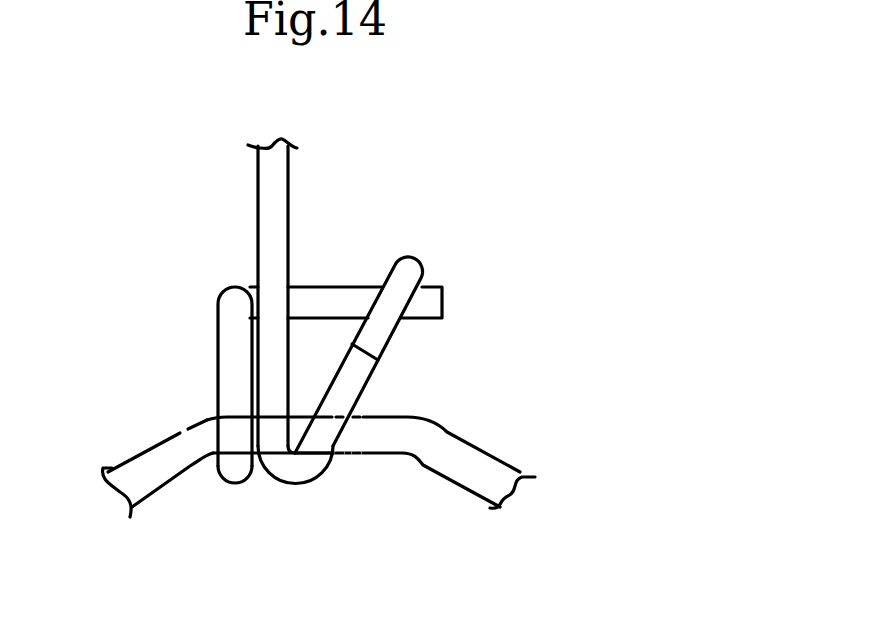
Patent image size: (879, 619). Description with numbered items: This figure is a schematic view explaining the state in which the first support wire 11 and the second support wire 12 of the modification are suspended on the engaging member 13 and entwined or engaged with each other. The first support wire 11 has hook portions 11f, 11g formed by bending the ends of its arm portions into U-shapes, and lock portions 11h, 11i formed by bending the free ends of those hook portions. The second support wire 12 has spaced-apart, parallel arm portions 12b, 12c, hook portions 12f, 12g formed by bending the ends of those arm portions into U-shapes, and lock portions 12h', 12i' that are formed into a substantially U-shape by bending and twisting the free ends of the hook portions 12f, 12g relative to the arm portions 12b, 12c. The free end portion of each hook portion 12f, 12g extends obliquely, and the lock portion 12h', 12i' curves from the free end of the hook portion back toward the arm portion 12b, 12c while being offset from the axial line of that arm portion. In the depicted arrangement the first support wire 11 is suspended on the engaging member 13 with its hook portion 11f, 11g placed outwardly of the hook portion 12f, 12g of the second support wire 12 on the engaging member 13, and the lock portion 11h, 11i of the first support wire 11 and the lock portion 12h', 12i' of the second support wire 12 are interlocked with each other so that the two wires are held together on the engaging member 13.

The first support wire 11 is at (354, 450).
The second support wire 12 is at (370, 376).
The engaging member 13 is at (148, 498).
The hook portion 11f is at (259, 539).
The hook portion 11g is at (233, 483).
The lock portion 11h is at (452, 321).
The lock portion 11i is at (442, 303).
The arm portion 12b is at (394, 292).
The arm portion 12c is at (288, 198).
The hook portion 12f is at (330, 529).
The hook portion 12g is at (302, 484).
The lock portion 12h' is at (474, 334).
The lock portion 12i' is at (474, 334).